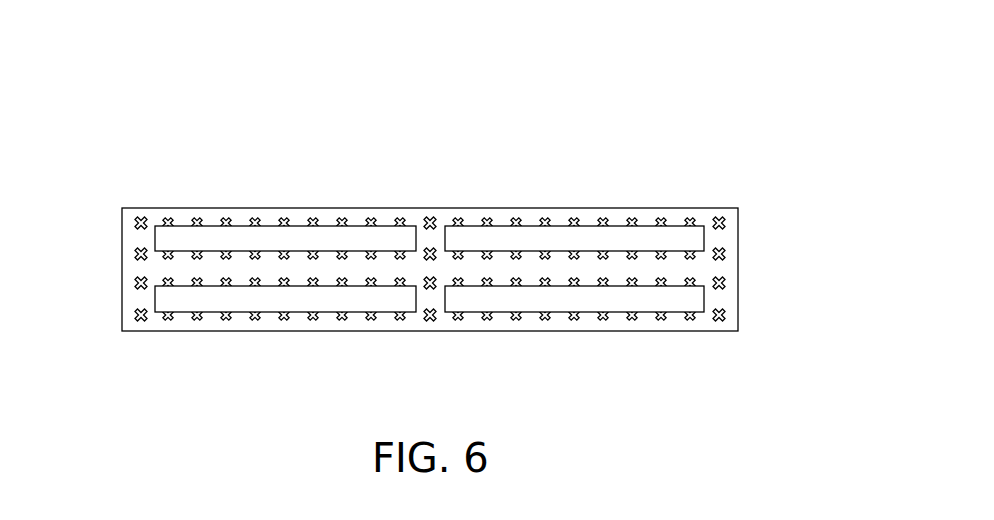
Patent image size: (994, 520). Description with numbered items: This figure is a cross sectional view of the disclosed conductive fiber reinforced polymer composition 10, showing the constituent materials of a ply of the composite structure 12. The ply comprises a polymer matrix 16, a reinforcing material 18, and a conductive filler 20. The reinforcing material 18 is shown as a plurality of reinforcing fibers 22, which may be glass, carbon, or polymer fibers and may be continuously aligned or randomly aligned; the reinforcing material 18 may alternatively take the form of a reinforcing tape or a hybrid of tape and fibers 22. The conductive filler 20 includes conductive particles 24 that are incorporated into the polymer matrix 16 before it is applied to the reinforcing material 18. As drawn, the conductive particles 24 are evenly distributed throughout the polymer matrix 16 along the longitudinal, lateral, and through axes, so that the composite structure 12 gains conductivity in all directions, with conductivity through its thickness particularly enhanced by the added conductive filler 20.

The assembly 10 is at (417, 213).
The composite structure 12 is at (460, 223).
The polymer matrix 16 is at (124, 367).
The reinforcing material 18 is at (198, 194).
The conductive filler 20 is at (92, 285).
The reinforcing fibers 22 is at (270, 233).
The conductive particles 24 is at (138, 252).